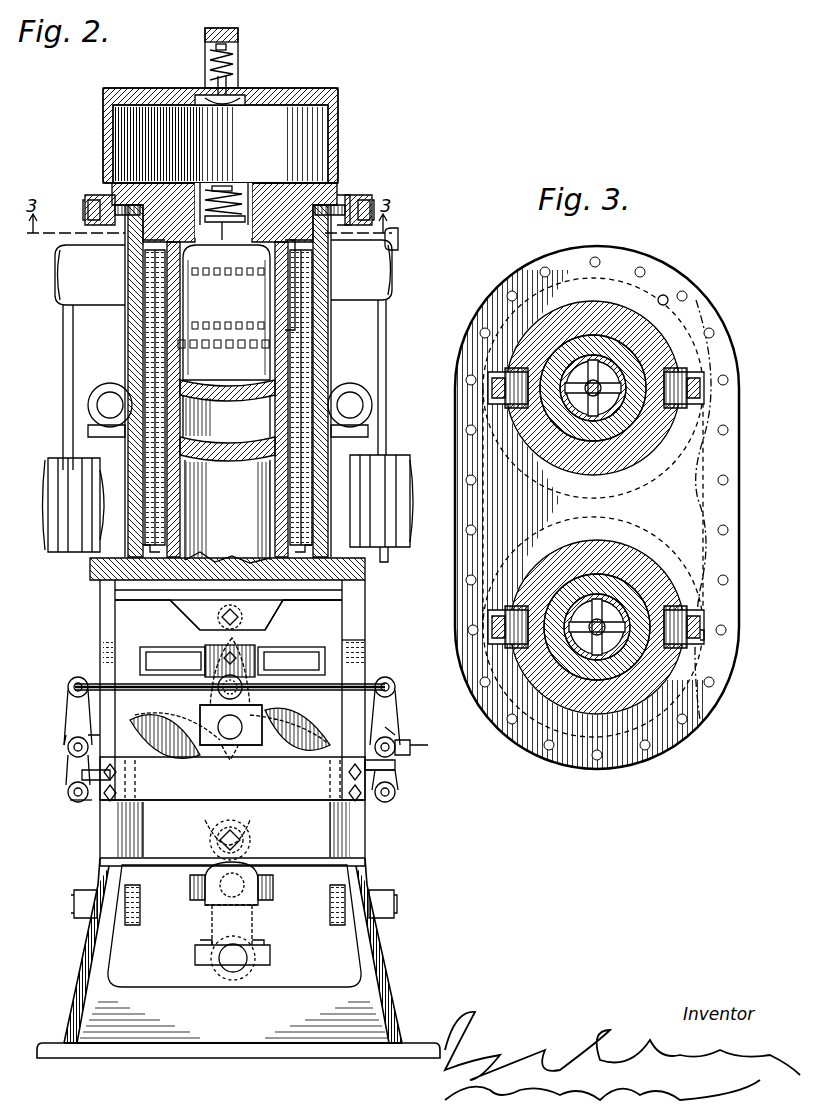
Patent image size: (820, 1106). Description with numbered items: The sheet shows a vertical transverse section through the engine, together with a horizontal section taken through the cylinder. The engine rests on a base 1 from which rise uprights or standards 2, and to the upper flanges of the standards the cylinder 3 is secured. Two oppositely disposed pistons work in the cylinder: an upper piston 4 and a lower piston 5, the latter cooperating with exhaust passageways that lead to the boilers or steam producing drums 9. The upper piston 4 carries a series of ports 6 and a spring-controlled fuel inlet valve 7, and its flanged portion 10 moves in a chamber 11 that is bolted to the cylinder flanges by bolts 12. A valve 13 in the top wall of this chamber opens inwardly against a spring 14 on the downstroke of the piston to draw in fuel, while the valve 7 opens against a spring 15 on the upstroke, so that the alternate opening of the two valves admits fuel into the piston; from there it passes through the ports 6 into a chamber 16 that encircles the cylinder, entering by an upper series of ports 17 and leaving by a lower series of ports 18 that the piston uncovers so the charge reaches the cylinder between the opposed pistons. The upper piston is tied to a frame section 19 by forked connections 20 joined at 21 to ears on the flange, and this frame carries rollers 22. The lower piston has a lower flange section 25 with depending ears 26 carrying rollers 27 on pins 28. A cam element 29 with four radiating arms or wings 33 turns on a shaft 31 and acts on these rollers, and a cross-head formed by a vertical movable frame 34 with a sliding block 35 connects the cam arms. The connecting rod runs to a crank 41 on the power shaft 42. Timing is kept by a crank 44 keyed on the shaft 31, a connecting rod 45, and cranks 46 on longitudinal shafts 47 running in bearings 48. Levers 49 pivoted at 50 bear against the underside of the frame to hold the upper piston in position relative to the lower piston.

In FIG. 2, the base 1 is at (265, 1055).
In FIG. 2, the uprights or standards 2 is at (352, 852).
In FIG. 2, the cylinder 3 is at (227, 420).
In FIG. 3, the cylinder 3 is at (657, 344).
In FIG. 2, the upper piston 4 is at (214, 332).
In FIG. 2, the lower piston 5 is at (227, 511).
In FIG. 2, the ports 6 is at (93, 357).
In FIG. 2, the fuel inlet valve 7 is at (226, 312).
In FIG. 2, the boilers or steam producing drums 9 is at (95, 548).
In FIG. 2, the flanged portion 10 is at (290, 183).
In FIG. 2, the chamber or cylinder 11 is at (310, 125).
In FIG. 3, the chamber or cylinder 11 is at (680, 492).
In FIG. 2, the bolts 12 is at (357, 200).
In FIG. 3, the bolts 12 is at (668, 300).
In FIG. 2, the valve 13 is at (240, 104).
In FIG. 2, the spring 14 is at (240, 78).
In FIG. 2, the spring 15 is at (232, 195).
In FIG. 2, the chamber 16 is at (392, 270).
In FIG. 2, the upper series of ports 17 is at (298, 290).
In FIG. 2, the lower series of ports 18 is at (300, 342).
In FIG. 2, the frame section 19 is at (232, 829).
In FIG. 2, the forked connections 20 is at (72, 840).
In FIG. 3, the forked connections 20 is at (704, 636).
In FIG. 2, the connection 21 is at (110, 198).
In FIG. 3, the connection 21 is at (700, 374).
In FIG. 2, the rollers 22 is at (240, 840).
In FIG. 2, the lower flange section 25 is at (285, 607).
In FIG. 2, the ears 26 is at (266, 612).
In FIG. 2, the rollers 27 is at (196, 614).
In FIG. 2, the studs or pins 28 is at (252, 600).
In FIG. 2, the cam element 29 is at (140, 728).
In FIG. 2, the shaft 31 is at (225, 735).
In FIG. 2, the radiating arms or wings 33 is at (185, 752).
In FIG. 2, the vertical movable frame 34 is at (320, 640).
In FIG. 2, the sliding block 35 is at (197, 661).
In FIG. 2, the crank 41 is at (212, 926).
In FIG. 2, the crank or power shaft 42 is at (250, 966).
In FIG. 2, the crank 44 is at (250, 720).
In FIG. 2, the connecting rod 45 is at (350, 688).
In FIG. 2, the cranks 46 is at (70, 750).
In FIG. 2, the shafts 47 is at (72, 738).
In FIG. 2, the bearings 48 is at (398, 772).
In FIG. 2, the levers 49 is at (135, 925).
In FIG. 2, the pivot 50 is at (398, 897).